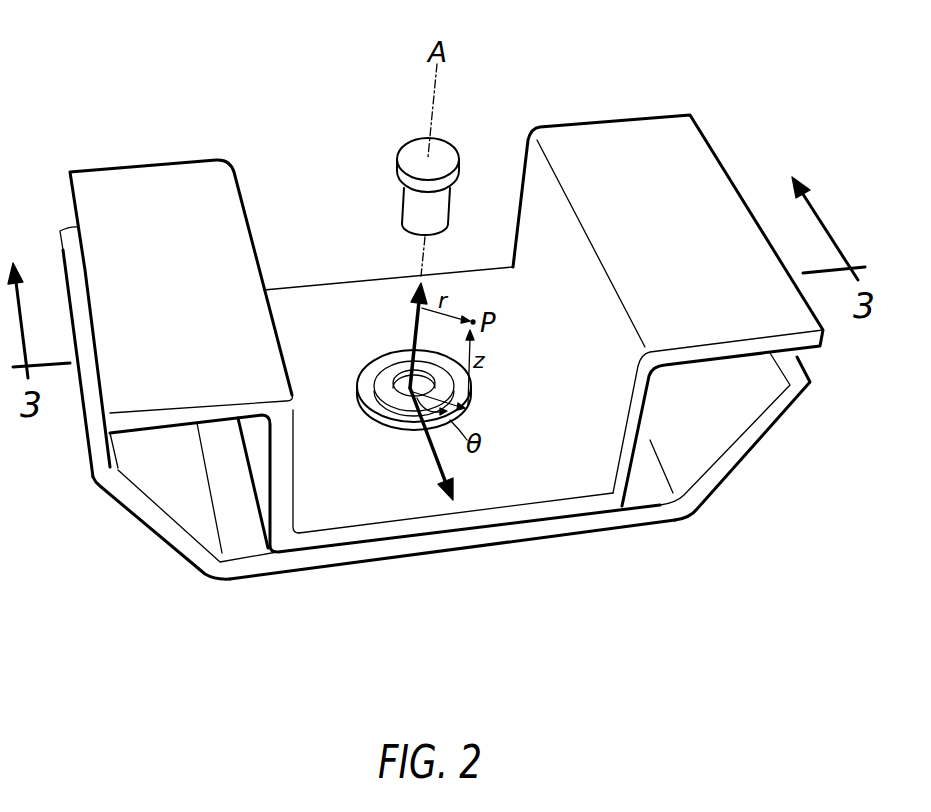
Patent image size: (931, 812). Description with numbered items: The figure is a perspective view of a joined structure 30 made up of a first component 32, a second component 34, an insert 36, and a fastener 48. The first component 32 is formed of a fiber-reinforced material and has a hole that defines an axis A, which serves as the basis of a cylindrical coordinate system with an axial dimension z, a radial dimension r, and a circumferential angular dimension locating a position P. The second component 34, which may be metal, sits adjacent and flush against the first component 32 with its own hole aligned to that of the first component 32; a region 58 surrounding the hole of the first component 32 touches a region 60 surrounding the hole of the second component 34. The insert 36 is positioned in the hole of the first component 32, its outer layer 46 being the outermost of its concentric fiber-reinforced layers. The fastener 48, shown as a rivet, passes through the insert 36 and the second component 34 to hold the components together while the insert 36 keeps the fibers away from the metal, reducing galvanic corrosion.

The joined structure 30 is at (95, 55).
The first component 32 is at (174, 160).
The second component 34 is at (148, 527).
The insert 36 is at (373, 353).
The outer layer 46 is at (387, 427).
The fastener 48 is at (408, 148).
The region 58 is at (517, 528).
The region 60 is at (534, 512).